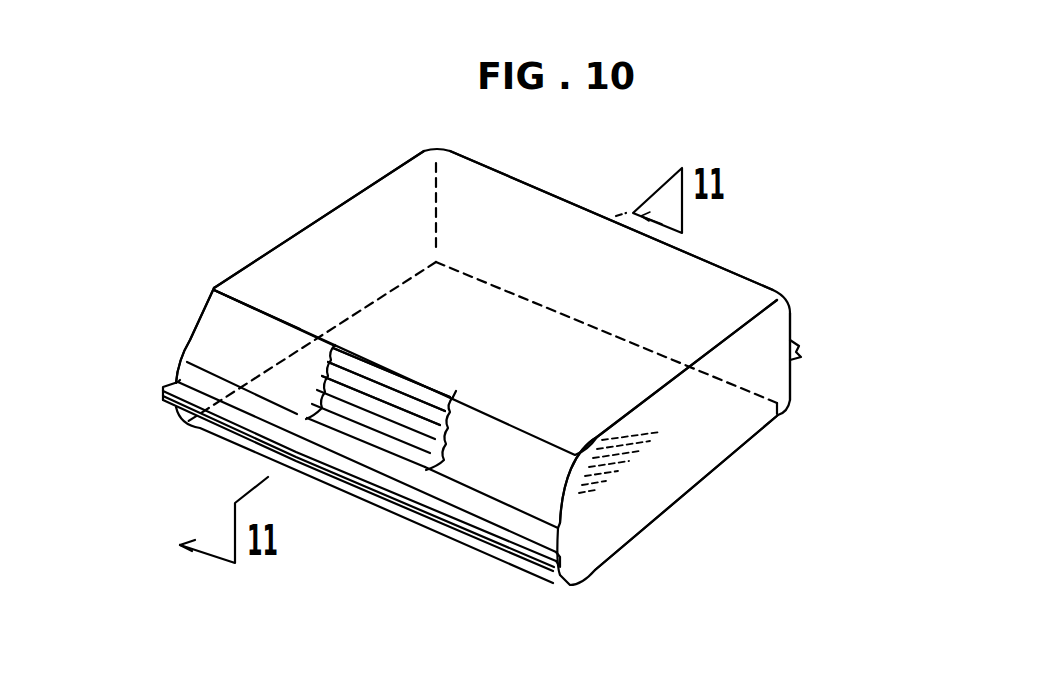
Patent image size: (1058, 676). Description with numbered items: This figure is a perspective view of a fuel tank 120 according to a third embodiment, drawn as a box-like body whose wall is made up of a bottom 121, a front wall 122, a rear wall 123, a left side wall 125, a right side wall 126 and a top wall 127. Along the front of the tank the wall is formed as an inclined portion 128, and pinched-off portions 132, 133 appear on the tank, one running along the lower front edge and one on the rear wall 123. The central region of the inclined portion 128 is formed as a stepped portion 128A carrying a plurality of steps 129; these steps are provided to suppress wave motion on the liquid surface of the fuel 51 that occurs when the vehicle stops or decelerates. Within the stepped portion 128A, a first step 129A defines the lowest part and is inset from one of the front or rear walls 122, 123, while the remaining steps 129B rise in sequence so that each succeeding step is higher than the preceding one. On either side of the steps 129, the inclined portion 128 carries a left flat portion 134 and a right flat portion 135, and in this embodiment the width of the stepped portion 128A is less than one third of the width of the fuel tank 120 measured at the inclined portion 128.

The fuel tank 120 is at (193, 152).
The bottom 121 is at (710, 477).
The front wall 122 is at (158, 347).
The rear wall 123 is at (795, 378).
The left side wall 125 is at (648, 493).
The right side wall 126 is at (286, 236).
The top wall 127 is at (368, 210).
The inclined portion 128 is at (188, 332).
The stepped portion 128A is at (350, 353).
The steps 129 is at (381, 404).
The first step 129A is at (430, 467).
The remaining steps 129B is at (463, 430).
The pinched-off portion 132 is at (405, 505).
The pinched-off portion 133 is at (802, 357).
The left flat portion 134 is at (507, 424).
The right flat portion 135 is at (258, 332).
The fuel 51 is at (580, 493).